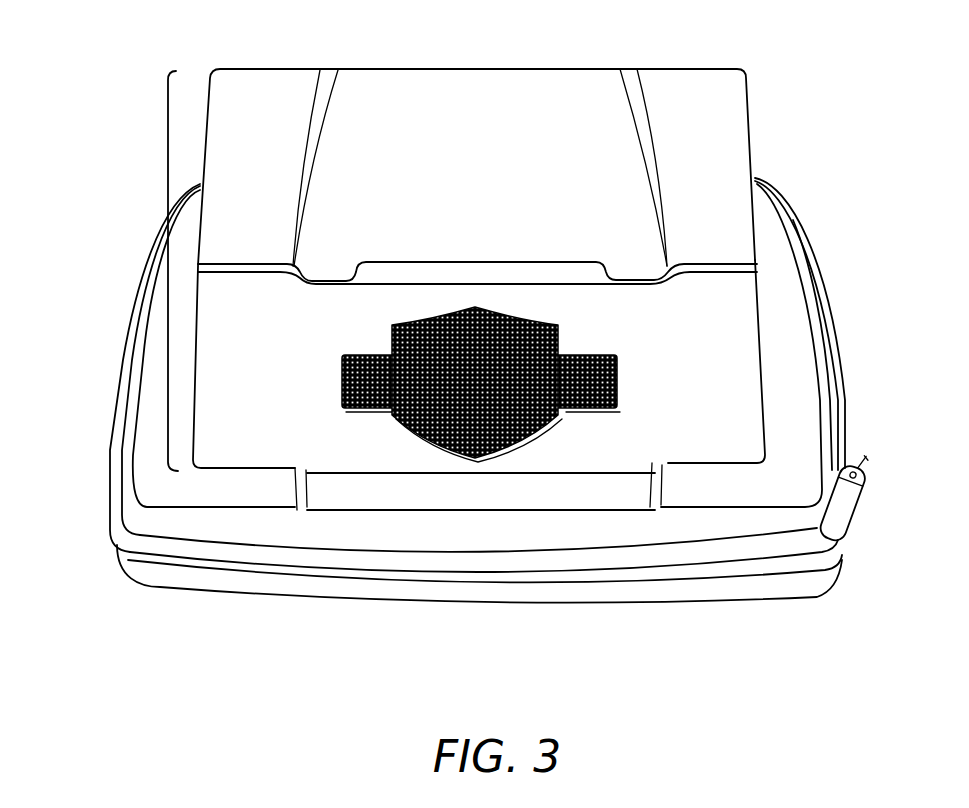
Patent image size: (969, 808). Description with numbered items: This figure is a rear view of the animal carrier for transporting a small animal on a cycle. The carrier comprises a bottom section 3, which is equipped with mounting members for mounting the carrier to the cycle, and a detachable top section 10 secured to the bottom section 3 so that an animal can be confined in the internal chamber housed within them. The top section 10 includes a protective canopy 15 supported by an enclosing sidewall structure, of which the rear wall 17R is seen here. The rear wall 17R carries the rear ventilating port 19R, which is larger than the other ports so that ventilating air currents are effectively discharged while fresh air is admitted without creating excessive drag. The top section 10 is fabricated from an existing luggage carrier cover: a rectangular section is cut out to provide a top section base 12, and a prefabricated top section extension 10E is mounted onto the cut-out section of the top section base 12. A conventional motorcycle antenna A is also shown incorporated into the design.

The top section 10 is at (785, 162).
The top section extension 10E is at (168, 165).
The protective canopy 15 is at (510, 85).
The rear wall 17R is at (208, 373).
The rear ventilating port 19R is at (620, 380).
The bottom section 3 is at (795, 330).
The top section base 12 is at (803, 420).
The antenna A is at (847, 503).